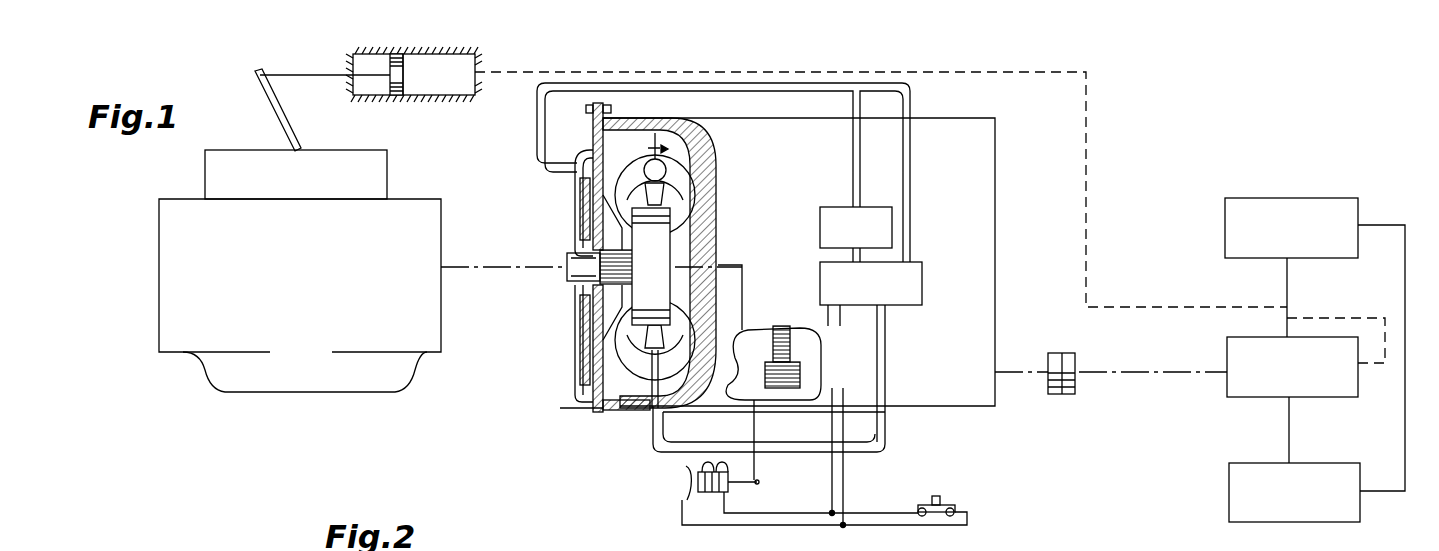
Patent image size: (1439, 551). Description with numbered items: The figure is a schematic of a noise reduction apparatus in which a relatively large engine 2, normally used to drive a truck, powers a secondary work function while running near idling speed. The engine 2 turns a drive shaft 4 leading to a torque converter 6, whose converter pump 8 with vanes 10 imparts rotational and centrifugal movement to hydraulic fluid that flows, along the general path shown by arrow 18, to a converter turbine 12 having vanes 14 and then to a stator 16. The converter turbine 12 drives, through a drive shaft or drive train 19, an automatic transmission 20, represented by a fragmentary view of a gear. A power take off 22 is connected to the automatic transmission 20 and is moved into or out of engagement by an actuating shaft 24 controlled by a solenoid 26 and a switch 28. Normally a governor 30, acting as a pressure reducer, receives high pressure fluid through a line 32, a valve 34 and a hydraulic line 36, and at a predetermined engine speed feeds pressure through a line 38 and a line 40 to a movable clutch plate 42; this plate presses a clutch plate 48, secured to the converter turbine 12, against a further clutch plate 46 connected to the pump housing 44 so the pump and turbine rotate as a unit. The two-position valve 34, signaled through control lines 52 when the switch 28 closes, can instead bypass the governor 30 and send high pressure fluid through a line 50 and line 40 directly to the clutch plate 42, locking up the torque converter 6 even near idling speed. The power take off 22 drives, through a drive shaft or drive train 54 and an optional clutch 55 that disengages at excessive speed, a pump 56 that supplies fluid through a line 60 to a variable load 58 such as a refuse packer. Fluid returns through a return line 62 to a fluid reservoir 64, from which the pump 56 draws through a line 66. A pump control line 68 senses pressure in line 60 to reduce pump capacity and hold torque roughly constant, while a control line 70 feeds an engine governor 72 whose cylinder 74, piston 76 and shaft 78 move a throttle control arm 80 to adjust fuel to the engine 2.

The engine 2 is at (168, 276).
The drive shaft 4 is at (483, 267).
The torque converter 6 is at (638, 279).
The converter pump 8 is at (707, 178).
The vanes 10 is at (678, 368).
The converter turbine 12 is at (605, 395).
The vanes 14 is at (640, 397).
The stator 16 is at (660, 196).
The arrow 18 is at (667, 150).
The drive shaft or drive train 19 is at (744, 310).
The automatic transmission 20 is at (790, 342).
The power take off 22 is at (800, 368).
The actuating shaft 24 is at (742, 484).
The solenoid 26 is at (681, 488).
The switch 28 is at (927, 500).
The governor 30 is at (832, 230).
The line 32 is at (665, 443).
The valve 34 is at (910, 277).
The hydraulic line 36 is at (848, 257).
The line 38 is at (852, 157).
The line 40 is at (713, 90).
The clutch plate 42 is at (578, 177).
The pump housing 44 is at (580, 125).
The clutch plate 46 is at (604, 145).
The clutch plate 48 is at (593, 195).
The line 50 is at (907, 157).
The control lines 52 is at (838, 476).
The drive shaft or drive train 54 is at (1022, 374).
The clutch 55 is at (1066, 357).
The pump 56 is at (1233, 385).
The variable load 58 is at (1340, 190).
The line 60 is at (1292, 283).
The return line 62 is at (1385, 492).
The fluid reservoir 64 is at (1232, 518).
The line 66 is at (1292, 440).
The pump control line 68 is at (1328, 318).
The control line 70 is at (1088, 278).
The engine governor 72 is at (476, 48).
The cylinder 74 is at (417, 98).
The piston 76 is at (390, 63).
The shaft 78 is at (316, 80).
The throttle control arm 80 is at (270, 108).